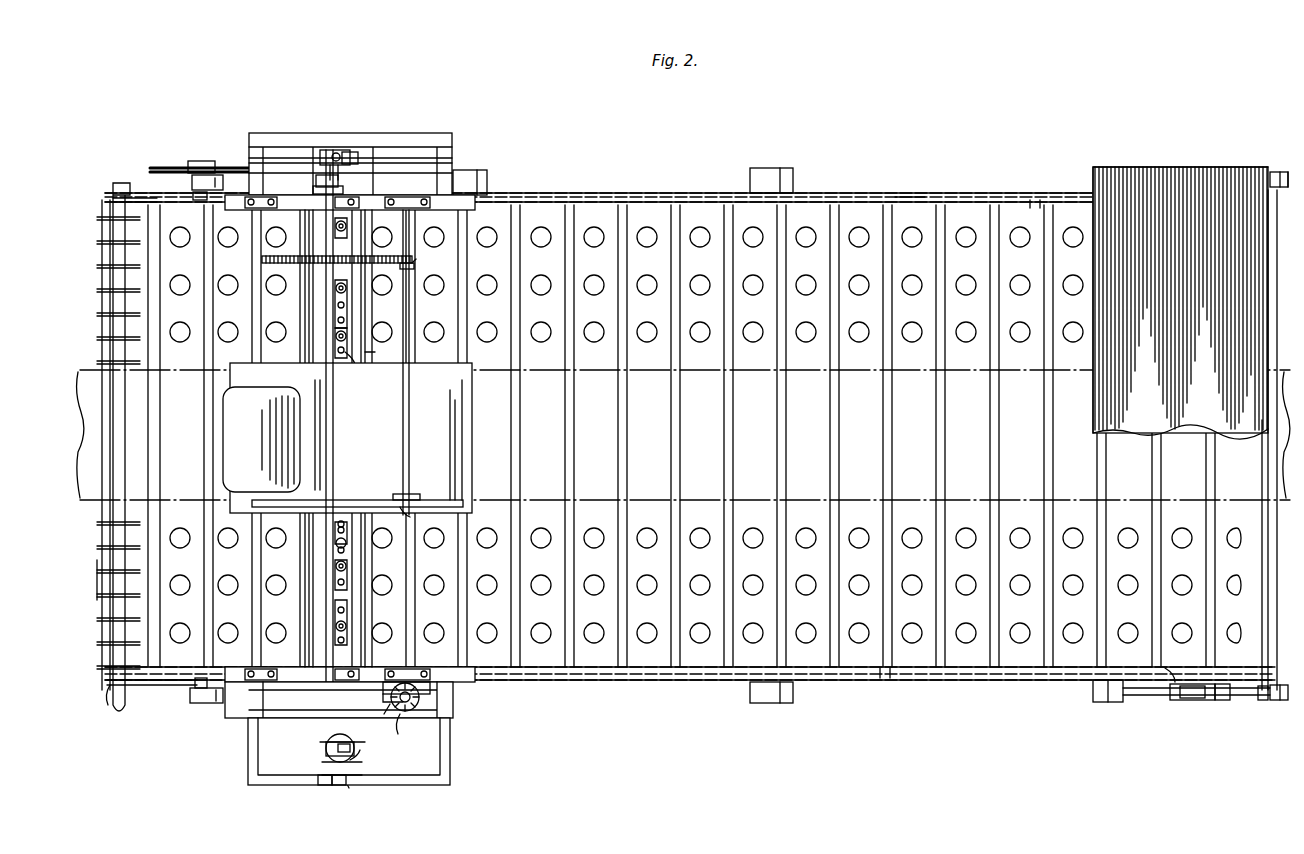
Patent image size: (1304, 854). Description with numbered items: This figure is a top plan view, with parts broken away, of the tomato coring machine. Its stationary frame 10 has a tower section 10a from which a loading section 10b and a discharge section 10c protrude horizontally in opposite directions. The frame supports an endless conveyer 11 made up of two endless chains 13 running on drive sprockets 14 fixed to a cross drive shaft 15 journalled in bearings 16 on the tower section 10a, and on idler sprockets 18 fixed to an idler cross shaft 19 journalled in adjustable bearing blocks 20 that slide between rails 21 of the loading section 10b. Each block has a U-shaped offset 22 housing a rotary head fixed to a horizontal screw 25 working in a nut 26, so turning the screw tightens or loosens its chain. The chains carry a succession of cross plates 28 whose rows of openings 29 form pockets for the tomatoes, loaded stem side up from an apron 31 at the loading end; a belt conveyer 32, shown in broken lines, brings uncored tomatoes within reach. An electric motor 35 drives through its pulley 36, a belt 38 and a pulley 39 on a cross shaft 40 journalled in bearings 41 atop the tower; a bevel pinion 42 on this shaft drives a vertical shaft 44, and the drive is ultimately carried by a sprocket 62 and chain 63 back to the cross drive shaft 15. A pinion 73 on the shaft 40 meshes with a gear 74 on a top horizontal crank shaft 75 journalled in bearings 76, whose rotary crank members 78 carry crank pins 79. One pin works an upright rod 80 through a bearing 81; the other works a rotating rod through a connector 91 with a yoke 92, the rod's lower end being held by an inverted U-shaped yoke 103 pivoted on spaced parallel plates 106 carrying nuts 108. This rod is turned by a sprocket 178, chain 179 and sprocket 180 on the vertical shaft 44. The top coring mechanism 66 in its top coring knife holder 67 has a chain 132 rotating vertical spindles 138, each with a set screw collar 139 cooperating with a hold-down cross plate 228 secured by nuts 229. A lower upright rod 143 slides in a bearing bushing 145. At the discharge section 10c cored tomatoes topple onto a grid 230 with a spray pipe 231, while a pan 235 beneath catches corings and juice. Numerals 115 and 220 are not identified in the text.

The stationary frame 10 is at (630, 150).
The tower section 10a is at (483, 170).
The loading section 10b is at (899, 193).
The discharge section 10c is at (108, 196).
The endless conveyer 11 is at (681, 198).
The endless chains 13 is at (838, 194).
The drive sprockets 14 is at (158, 200).
The cross drive shaft 15 is at (196, 194).
The bearings 16 is at (194, 176).
The idler sprockets 18 is at (1192, 658).
The idler cross shaft 19 is at (1188, 700).
The adjustable bearing blocks 20 is at (1203, 700).
The rails 21 is at (1147, 700).
The U-shaped offset 22 is at (1222, 700).
The horizontal screw 25 is at (1278, 170).
The nut 26 is at (1260, 702).
The cross plates 28 is at (1048, 206).
The openings 29 is at (547, 284).
The apron 31 is at (1258, 312).
The belt conveyer 32 is at (1275, 502).
The electric motor 35 is at (248, 394).
The pulley 36 is at (262, 509).
The belt 38 is at (340, 500).
The pulley 39 is at (428, 524).
The cross shaft 40 is at (410, 430).
The bearings 41 is at (410, 202).
The bevel pinion 42 is at (402, 674).
The vertical shaft 44 is at (402, 722).
The sprocket 62 is at (206, 160).
The chain 63 is at (158, 166).
The top coring mechanism 66 is at (348, 360).
The top coring knife holder 67 is at (370, 352).
The pinion 73 is at (416, 260).
The gear 74 is at (278, 261).
The top horizontal crank shaft 75 is at (334, 439).
The bearings 76 is at (262, 204).
The rotary crank members 78 is at (328, 150).
The crank pin 79 is at (342, 152).
The upright rod 80 is at (334, 150).
The bearing 81 is at (352, 156).
The connector 91 is at (362, 758).
The yoke 92 is at (358, 746).
The inverted U-shaped yoke 103 is at (340, 788).
The spaced parallel plates 106 is at (328, 776).
The nuts 108 is at (324, 786).
The housing 115 is at (302, 140).
The chain 132 is at (326, 752).
The vertical spindle 138 is at (332, 290).
The set screw collar 139 is at (334, 584).
The upright rod 143 is at (347, 192).
The bearing bushing 145 is at (316, 184).
The sprocket 178 is at (311, 699).
The chain 179 is at (420, 700).
The sprocket 180 is at (392, 708).
The link 220 is at (328, 334).
The cross plate 228 is at (332, 625).
The nuts 229 is at (348, 524).
The grid 230 is at (92, 614).
The spray pipe 231 is at (120, 182).
The pan 235 is at (106, 688).